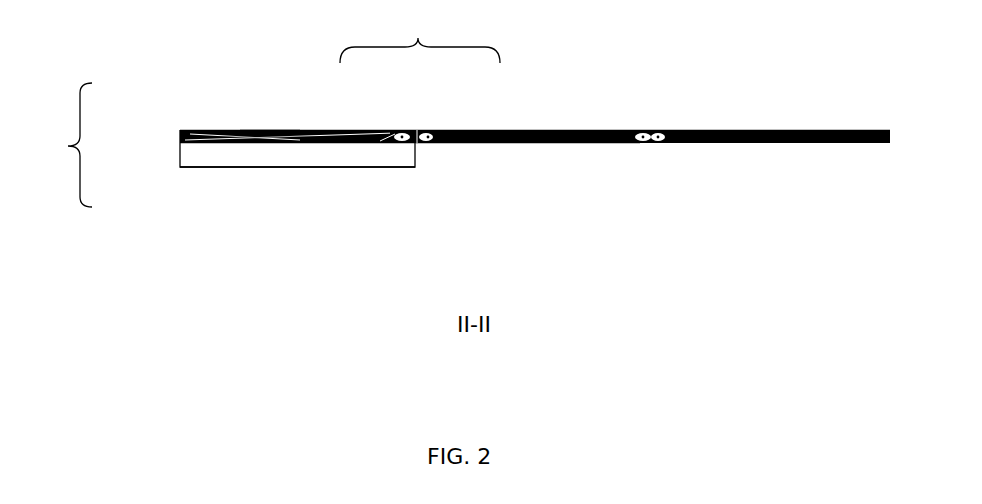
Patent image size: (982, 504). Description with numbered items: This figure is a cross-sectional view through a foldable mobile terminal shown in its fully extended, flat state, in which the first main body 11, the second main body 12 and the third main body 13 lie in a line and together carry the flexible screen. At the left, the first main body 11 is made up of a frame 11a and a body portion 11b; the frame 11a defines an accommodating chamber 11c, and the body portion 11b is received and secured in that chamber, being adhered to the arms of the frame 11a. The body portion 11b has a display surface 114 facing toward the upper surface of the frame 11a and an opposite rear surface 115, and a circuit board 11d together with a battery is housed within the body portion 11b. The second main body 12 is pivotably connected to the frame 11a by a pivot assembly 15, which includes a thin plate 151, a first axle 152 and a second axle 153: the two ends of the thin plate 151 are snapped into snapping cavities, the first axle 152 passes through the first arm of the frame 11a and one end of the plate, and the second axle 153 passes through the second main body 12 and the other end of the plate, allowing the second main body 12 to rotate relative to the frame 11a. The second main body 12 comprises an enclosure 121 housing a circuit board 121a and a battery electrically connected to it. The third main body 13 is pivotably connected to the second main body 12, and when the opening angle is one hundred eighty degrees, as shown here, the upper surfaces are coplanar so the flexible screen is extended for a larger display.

The first main body 11 is at (229, 147).
The display surface 114 is at (207, 132).
The body portion 11b is at (192, 137).
The rear surface 115 is at (180, 143).
The frame 11a is at (203, 160).
The accommodating chamber 11c is at (295, 158).
The circuit board 11d is at (263, 130).
The pivot assembly 15 is at (418, 87).
The thin plate 151 is at (417, 160).
The first axle 152 is at (407, 131).
The second axle 153 is at (423, 134).
The second main body 12 is at (556, 143).
The enclosure 121 is at (583, 130).
The circuit board 121a is at (520, 142).
The third main body 13 is at (788, 143).